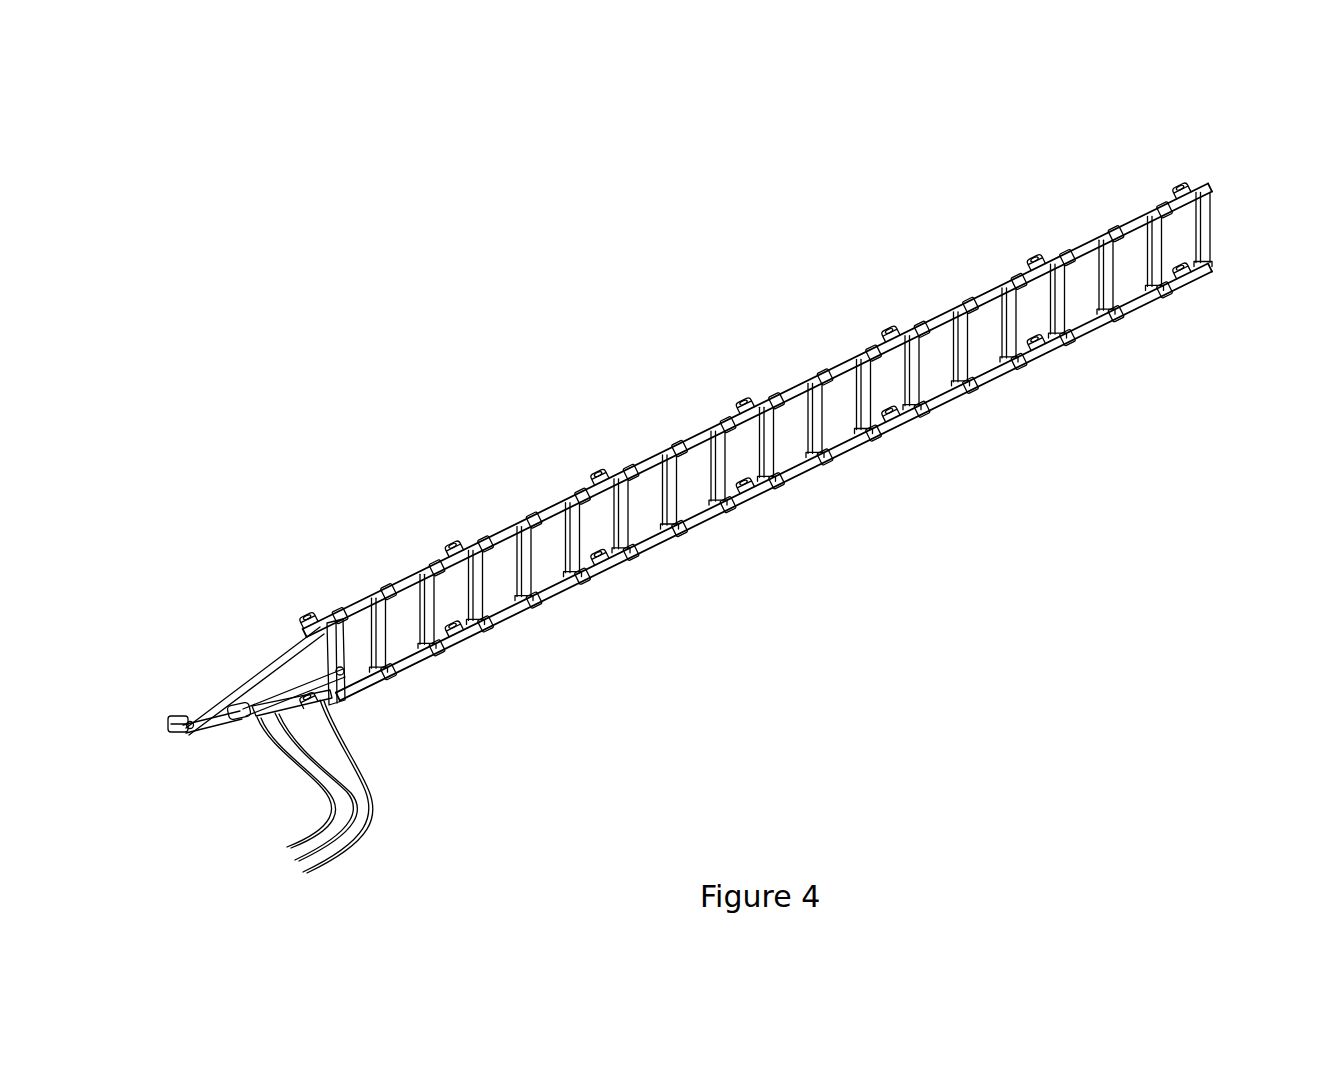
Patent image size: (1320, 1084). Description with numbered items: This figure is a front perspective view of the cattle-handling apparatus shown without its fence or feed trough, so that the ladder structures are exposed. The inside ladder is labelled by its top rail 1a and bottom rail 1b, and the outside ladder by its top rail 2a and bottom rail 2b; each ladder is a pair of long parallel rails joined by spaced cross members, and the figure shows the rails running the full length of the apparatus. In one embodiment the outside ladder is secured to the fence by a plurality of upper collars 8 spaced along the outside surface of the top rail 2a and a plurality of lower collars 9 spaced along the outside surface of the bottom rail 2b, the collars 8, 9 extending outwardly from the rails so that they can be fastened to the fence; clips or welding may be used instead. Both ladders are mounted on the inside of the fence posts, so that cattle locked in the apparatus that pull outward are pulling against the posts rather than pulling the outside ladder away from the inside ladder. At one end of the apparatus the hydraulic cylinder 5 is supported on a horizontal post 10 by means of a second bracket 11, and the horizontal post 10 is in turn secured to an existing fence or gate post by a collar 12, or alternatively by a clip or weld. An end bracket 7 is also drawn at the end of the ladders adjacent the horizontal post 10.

The top rail of the inside ladder 1a is at (550, 520).
The bottom rail of the inside ladder 1b is at (522, 612).
The top rail of the outside ladder 2a is at (550, 508).
The bottom rail of the outside ladder 2b is at (505, 618).
The hydraulic cylinder 5 is at (244, 762).
The end bracket 7 is at (338, 655).
The upper collar 8 is at (1189, 184).
The lower collar 9 is at (1196, 268).
The horizontal post 10 is at (197, 736).
The second bracket 11 is at (237, 709).
The collar 12 is at (179, 718).